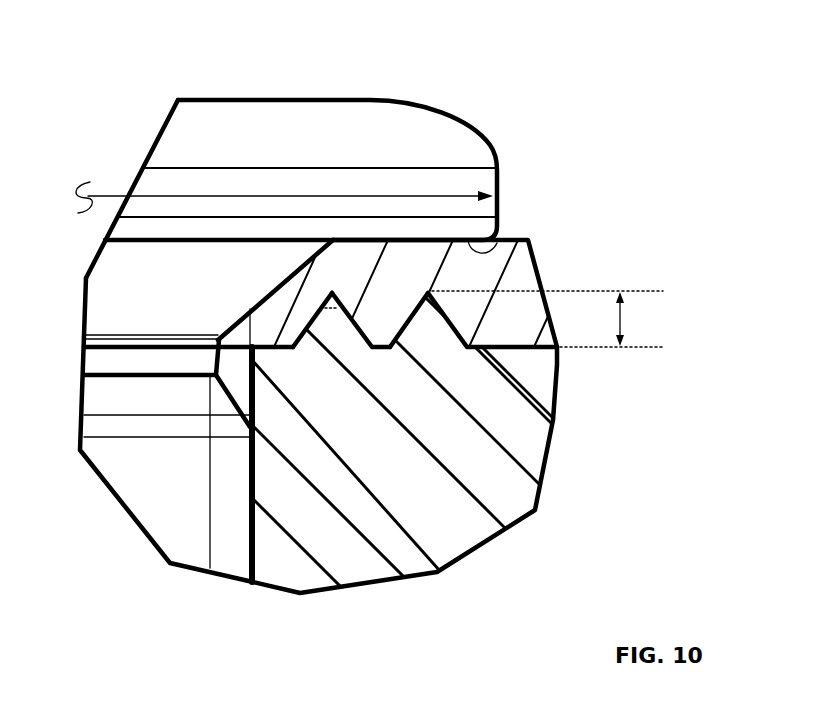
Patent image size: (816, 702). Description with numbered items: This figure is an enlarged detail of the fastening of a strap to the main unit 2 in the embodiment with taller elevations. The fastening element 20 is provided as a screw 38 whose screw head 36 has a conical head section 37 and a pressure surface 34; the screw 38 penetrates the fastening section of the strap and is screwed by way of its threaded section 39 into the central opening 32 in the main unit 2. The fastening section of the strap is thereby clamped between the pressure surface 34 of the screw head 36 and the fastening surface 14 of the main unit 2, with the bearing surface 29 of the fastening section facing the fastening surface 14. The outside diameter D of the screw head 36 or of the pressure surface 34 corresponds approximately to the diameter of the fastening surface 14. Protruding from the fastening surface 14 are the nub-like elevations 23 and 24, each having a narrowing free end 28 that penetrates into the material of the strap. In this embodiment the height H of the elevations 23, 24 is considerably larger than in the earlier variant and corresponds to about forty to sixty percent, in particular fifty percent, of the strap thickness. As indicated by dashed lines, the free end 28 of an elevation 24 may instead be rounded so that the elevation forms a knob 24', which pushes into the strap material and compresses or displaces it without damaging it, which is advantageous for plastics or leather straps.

The main unit 2 is at (425, 557).
The fastening surface 14 is at (422, 292).
The fastening element 20 is at (366, 98).
The elevation 23 is at (422, 308).
The elevation 24 is at (454, 434).
The knob 24' is at (474, 212).
The free end 28 is at (330, 290).
The bearing surface 29 is at (377, 360).
The central opening 32 is at (245, 552).
The pressure surface 34 is at (480, 270).
The screw head 36 is at (200, 152).
The conical head section 37 is at (120, 298).
The screw 38 is at (170, 94).
The threaded section 39 is at (180, 478).
The outside diameter D is at (110, 197).
The height H is at (629, 319).